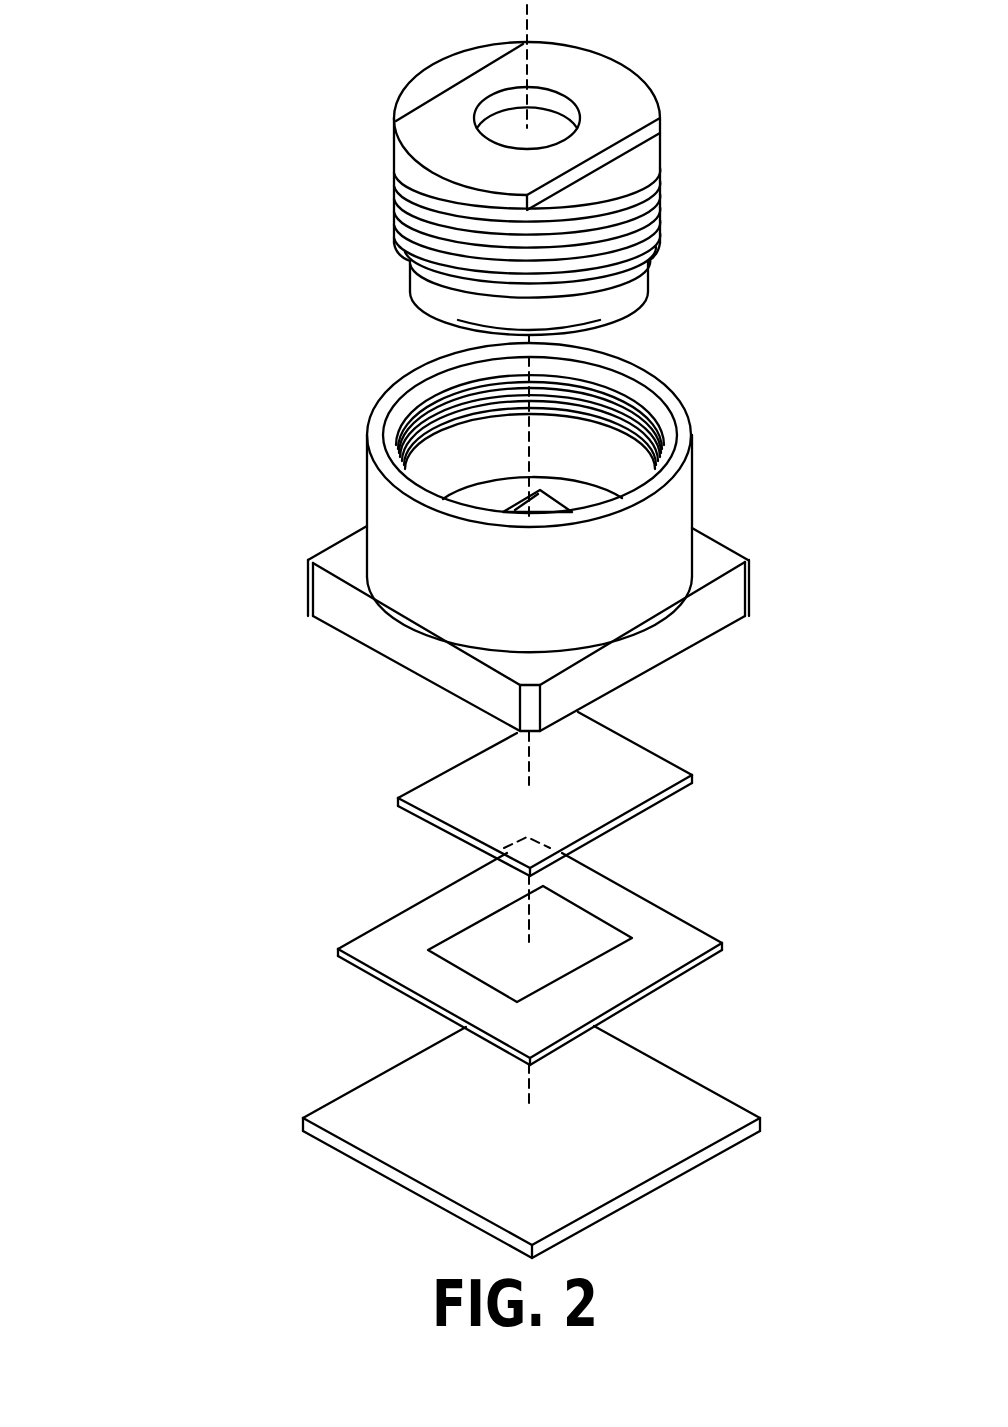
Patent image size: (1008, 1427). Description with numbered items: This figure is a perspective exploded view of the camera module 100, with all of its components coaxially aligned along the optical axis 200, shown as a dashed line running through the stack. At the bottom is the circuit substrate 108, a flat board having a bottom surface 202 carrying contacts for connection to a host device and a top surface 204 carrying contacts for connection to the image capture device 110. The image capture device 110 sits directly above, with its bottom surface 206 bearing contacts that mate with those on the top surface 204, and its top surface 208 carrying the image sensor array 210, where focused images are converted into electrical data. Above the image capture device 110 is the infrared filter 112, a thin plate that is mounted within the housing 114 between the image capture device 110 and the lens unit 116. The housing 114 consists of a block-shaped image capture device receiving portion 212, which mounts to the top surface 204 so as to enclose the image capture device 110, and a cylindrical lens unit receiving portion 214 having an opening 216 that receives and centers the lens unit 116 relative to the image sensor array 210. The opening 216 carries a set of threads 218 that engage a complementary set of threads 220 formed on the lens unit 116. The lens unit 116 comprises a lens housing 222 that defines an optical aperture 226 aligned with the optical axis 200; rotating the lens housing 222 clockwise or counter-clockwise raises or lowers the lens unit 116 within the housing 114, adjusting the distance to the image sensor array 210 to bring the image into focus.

The camera module 100 is at (120, 153).
The optical axis 200 is at (524, 17).
The lens unit 116 is at (745, 182).
The lens housing 222 is at (407, 160).
The optical aperture 226 is at (541, 116).
The set of threads 220 is at (640, 180).
The housing 114 is at (806, 470).
The lens unit receiving portion 214 is at (388, 343).
The opening 216 is at (571, 433).
The set of threads 218 is at (422, 397).
The image capture device receiving portion 212 is at (335, 666).
The infrared filter 112 is at (750, 767).
The image capture device 110 is at (788, 945).
The bottom surface 206 is at (393, 986).
The top surface 208 is at (401, 985).
The image sensor array 210 is at (587, 938).
The circuit substrate 108 is at (829, 1114).
The top surface 204 is at (376, 1158).
The bottom surface 202 is at (372, 1167).